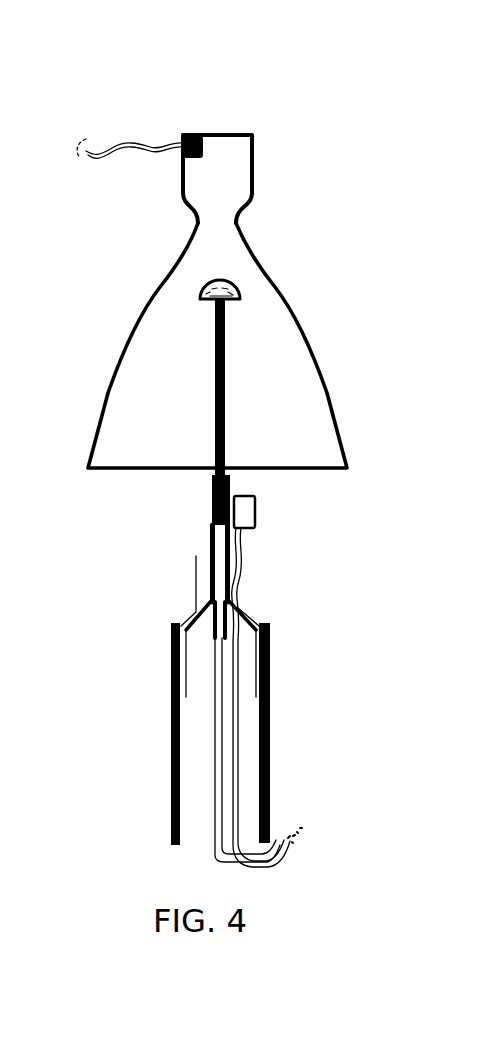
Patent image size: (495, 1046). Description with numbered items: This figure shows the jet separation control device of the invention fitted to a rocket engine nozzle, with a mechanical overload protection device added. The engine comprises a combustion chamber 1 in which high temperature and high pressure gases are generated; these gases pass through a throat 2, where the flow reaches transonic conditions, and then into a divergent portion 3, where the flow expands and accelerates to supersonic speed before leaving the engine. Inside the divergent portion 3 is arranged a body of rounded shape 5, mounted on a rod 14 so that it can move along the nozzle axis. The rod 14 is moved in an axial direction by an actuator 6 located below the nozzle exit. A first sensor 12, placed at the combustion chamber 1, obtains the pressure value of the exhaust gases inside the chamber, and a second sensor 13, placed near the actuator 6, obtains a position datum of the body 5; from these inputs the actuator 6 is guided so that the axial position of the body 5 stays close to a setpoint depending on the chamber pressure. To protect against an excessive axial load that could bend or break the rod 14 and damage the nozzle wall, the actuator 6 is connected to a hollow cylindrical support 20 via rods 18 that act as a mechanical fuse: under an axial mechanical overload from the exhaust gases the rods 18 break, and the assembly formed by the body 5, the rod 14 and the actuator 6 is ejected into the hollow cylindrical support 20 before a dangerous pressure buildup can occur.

The combustion chamber 1 is at (253, 156).
The throat 2 is at (239, 217).
The divergent portion 3 is at (310, 334).
The body of rounded shape 5 is at (231, 283).
The actuator 6 is at (209, 507).
The first sensor 12 is at (188, 135).
The second sensor 13 is at (257, 508).
The rod 14 is at (227, 412).
The rods (mechanical fuse) 18 is at (233, 602).
The hollow cylindrical support 20 is at (170, 721).